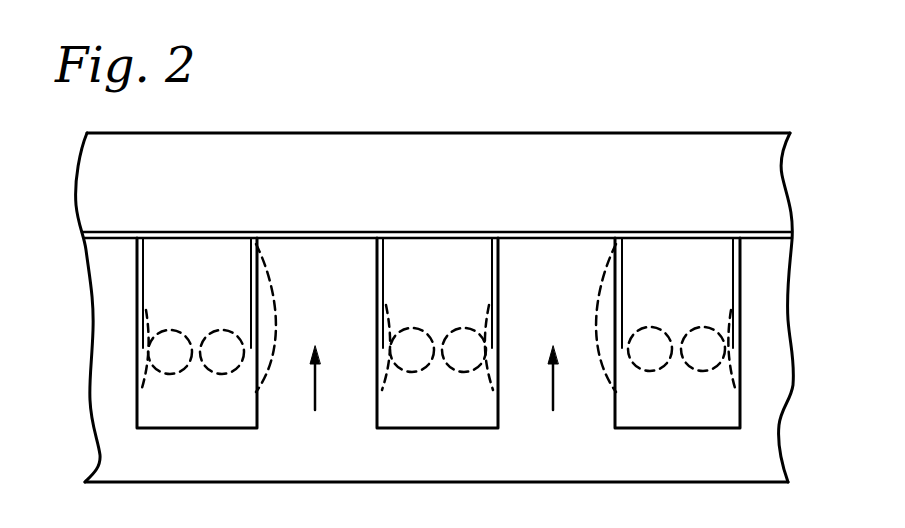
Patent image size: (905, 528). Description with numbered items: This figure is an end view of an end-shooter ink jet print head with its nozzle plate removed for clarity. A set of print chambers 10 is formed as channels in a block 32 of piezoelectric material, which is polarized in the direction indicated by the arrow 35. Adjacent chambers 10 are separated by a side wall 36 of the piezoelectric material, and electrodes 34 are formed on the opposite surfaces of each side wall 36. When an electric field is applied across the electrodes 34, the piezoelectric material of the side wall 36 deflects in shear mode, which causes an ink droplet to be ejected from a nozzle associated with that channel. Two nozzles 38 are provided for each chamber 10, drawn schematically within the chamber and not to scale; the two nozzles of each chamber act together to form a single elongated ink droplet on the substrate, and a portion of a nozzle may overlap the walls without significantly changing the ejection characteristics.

The print chamber 10 is at (183, 412).
The block of piezoelectric material 32 is at (646, 475).
The electrodes 34 is at (249, 282).
The arrow 35 is at (315, 406).
The side wall 36 is at (330, 244).
The nozzles 38 is at (157, 350).